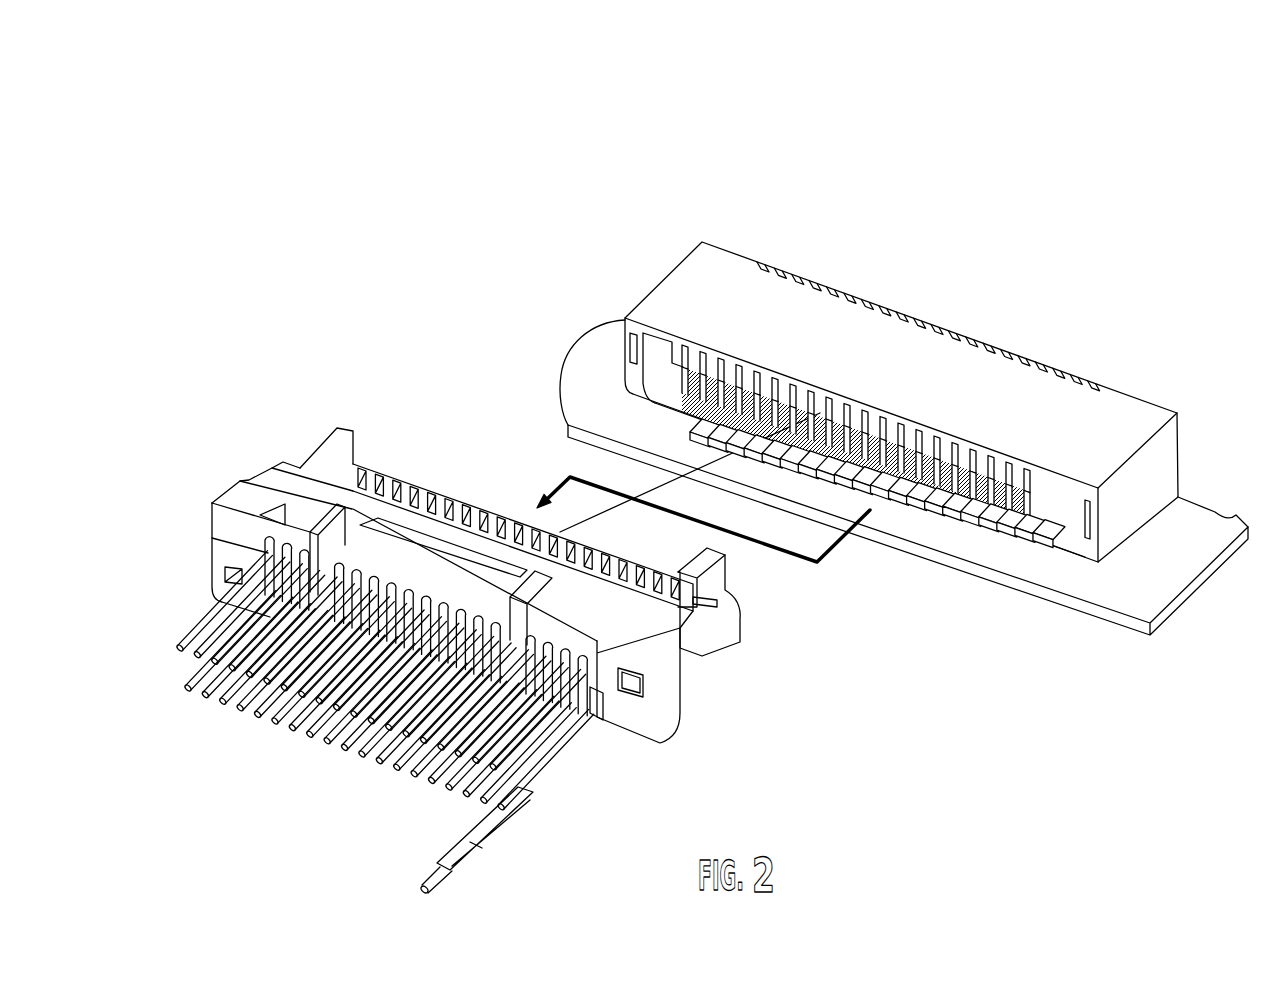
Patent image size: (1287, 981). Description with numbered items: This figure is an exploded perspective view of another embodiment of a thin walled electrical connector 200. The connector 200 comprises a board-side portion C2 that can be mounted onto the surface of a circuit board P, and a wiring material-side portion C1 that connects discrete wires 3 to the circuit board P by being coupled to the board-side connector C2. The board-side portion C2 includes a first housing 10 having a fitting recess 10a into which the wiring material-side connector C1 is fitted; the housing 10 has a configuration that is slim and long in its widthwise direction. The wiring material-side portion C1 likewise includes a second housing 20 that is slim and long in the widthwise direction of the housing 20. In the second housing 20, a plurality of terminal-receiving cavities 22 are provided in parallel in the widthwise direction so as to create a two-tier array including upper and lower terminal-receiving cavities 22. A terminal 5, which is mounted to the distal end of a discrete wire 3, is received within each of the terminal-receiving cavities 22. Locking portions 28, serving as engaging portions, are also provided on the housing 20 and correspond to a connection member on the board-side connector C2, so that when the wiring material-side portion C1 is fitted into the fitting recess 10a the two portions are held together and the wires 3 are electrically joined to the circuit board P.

The thin walled electrical connector 200 is at (778, 136).
The board-side portion C2 is at (844, 366).
The first housing 10 is at (645, 312).
The fitting recess 10a is at (683, 423).
The circuit board P is at (1190, 562).
The wiring material-side portion C1 is at (474, 578).
The second housing 20 is at (665, 720).
The terminal-receiving cavities 22 is at (265, 541).
The locking portions 28 is at (708, 598).
The terminal 5 is at (557, 824).
The discrete wire 3 is at (450, 864).